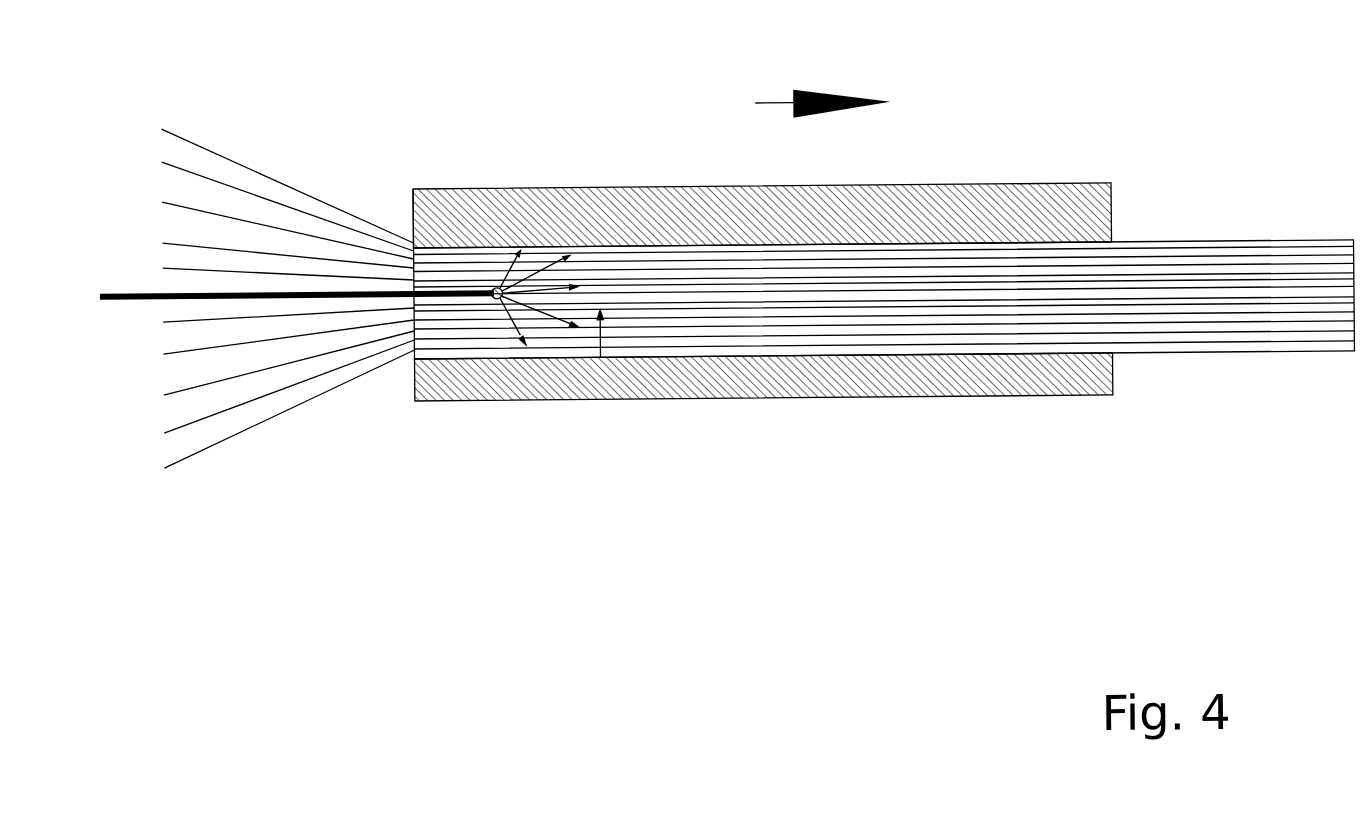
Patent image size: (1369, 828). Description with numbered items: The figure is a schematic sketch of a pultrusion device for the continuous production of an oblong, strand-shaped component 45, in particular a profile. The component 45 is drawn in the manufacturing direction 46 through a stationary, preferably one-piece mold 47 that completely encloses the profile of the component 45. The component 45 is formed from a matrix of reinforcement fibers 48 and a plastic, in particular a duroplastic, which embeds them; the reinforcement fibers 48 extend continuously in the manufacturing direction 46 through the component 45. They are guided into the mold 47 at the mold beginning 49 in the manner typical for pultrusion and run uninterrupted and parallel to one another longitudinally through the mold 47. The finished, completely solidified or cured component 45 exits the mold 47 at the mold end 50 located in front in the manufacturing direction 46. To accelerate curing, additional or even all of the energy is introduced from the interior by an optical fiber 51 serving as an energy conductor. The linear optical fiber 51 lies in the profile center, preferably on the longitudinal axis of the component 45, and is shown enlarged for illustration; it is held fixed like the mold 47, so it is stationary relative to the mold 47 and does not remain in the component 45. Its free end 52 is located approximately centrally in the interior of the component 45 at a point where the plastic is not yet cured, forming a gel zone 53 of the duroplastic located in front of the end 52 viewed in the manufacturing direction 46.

The component 45 is at (1179, 338).
The manufacturing direction 46 is at (773, 106).
The mold 47 is at (867, 382).
The reinforcement fibers 48 is at (320, 328).
The mold beginning 49 is at (413, 214).
The mold end 50 is at (1113, 218).
The optical fiber 51 is at (382, 298).
The end of the optical fiber 52 is at (496, 290).
The gel zone 53 is at (600, 359).